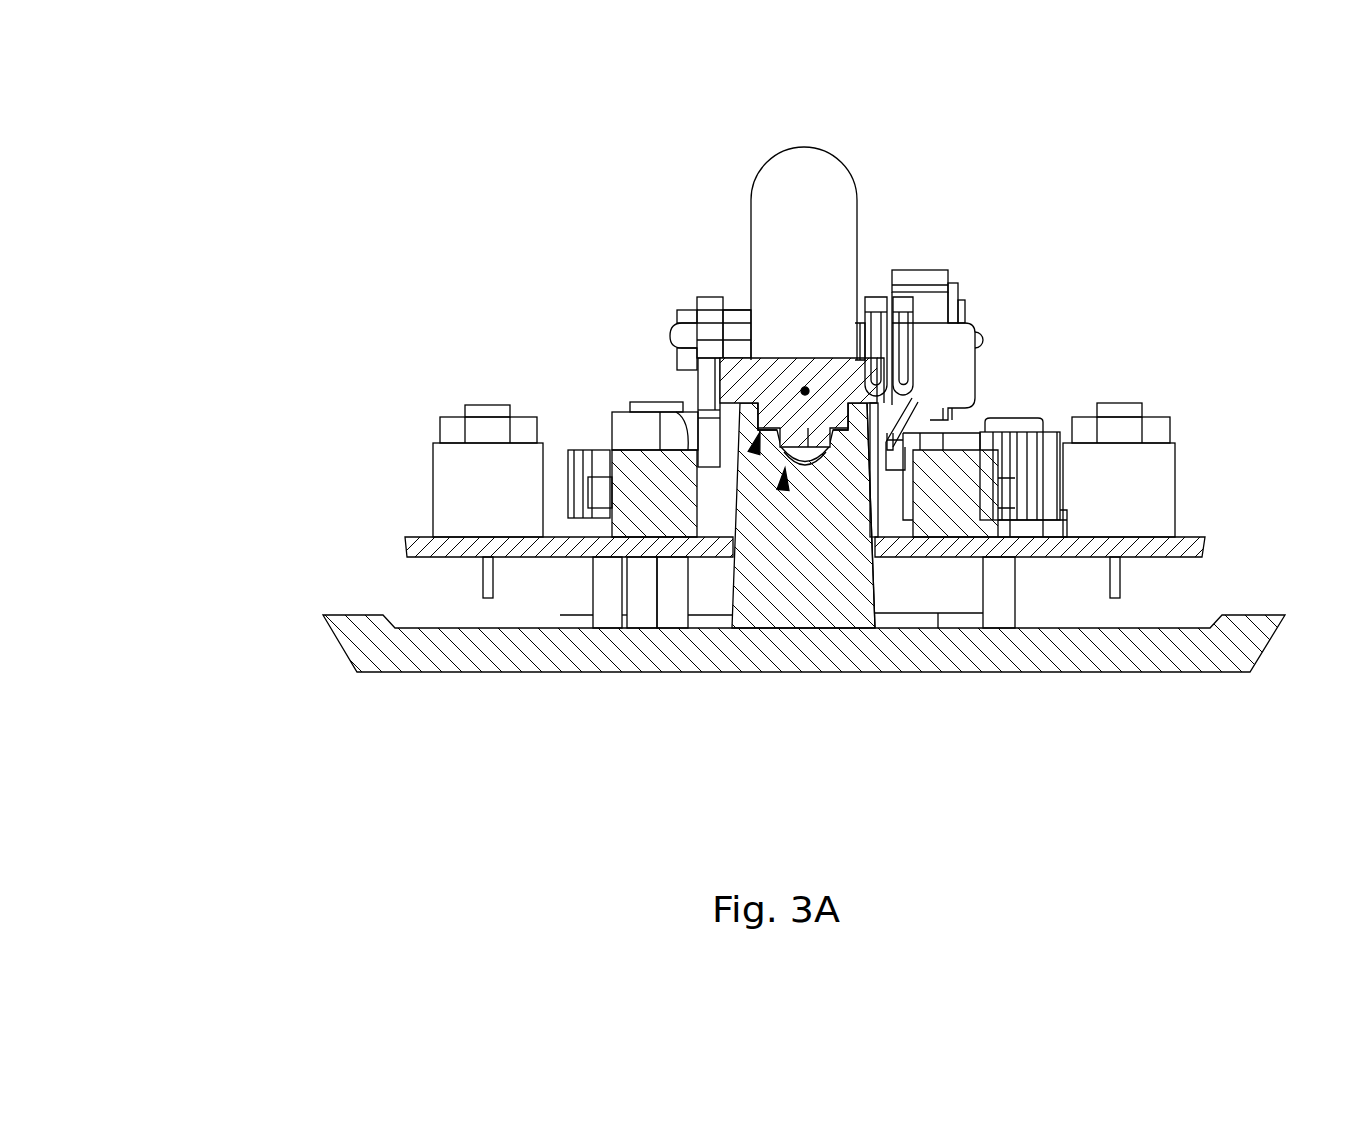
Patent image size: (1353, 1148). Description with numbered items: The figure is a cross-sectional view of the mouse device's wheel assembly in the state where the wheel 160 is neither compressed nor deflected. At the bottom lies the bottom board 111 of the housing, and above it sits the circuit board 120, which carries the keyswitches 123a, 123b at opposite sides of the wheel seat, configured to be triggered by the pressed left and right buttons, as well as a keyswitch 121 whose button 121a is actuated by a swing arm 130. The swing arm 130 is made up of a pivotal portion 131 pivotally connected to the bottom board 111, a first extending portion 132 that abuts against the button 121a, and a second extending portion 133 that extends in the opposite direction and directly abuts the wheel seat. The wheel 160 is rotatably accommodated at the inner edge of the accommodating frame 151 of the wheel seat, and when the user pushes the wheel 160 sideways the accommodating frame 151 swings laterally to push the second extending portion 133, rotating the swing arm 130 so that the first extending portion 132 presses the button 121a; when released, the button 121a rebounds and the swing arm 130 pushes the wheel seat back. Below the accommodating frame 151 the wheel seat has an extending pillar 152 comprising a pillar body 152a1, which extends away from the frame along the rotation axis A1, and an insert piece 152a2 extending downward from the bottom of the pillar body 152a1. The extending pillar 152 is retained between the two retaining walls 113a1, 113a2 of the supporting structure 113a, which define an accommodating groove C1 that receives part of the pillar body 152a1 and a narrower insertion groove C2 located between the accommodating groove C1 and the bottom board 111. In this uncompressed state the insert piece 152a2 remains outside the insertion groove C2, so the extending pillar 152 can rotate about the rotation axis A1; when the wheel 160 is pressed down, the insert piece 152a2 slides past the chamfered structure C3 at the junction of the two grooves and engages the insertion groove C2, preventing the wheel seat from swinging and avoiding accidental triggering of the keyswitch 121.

The bottom board 111 is at (427, 657).
The supporting structure 113a is at (863, 580).
The retaining wall 113a1 is at (755, 403).
The retaining wall 113a2 is at (868, 418).
The circuit board 120 is at (415, 543).
The keyswitch 121 is at (640, 525).
The button 121a is at (605, 498).
The keyswitch 123a is at (487, 422).
The keyswitch 123b is at (1122, 422).
The swing arm 130 is at (418, 312).
The pivotal portion 131 is at (622, 423).
The first extending portion 132 is at (577, 468).
The second extending portion 133 is at (707, 420).
The accommodating frame 151 is at (866, 370).
The light guide assembly 152 is at (606, 450).
The pillar body 152a1 is at (790, 360).
The insert piece 152a2 is at (835, 440).
The wheel 160 is at (797, 150).
The rotation axis A1 is at (805, 386).
The accommodating groove C1 is at (754, 453).
The insertion groove C2 is at (808, 428).
The chamfered structure C3 is at (783, 490).